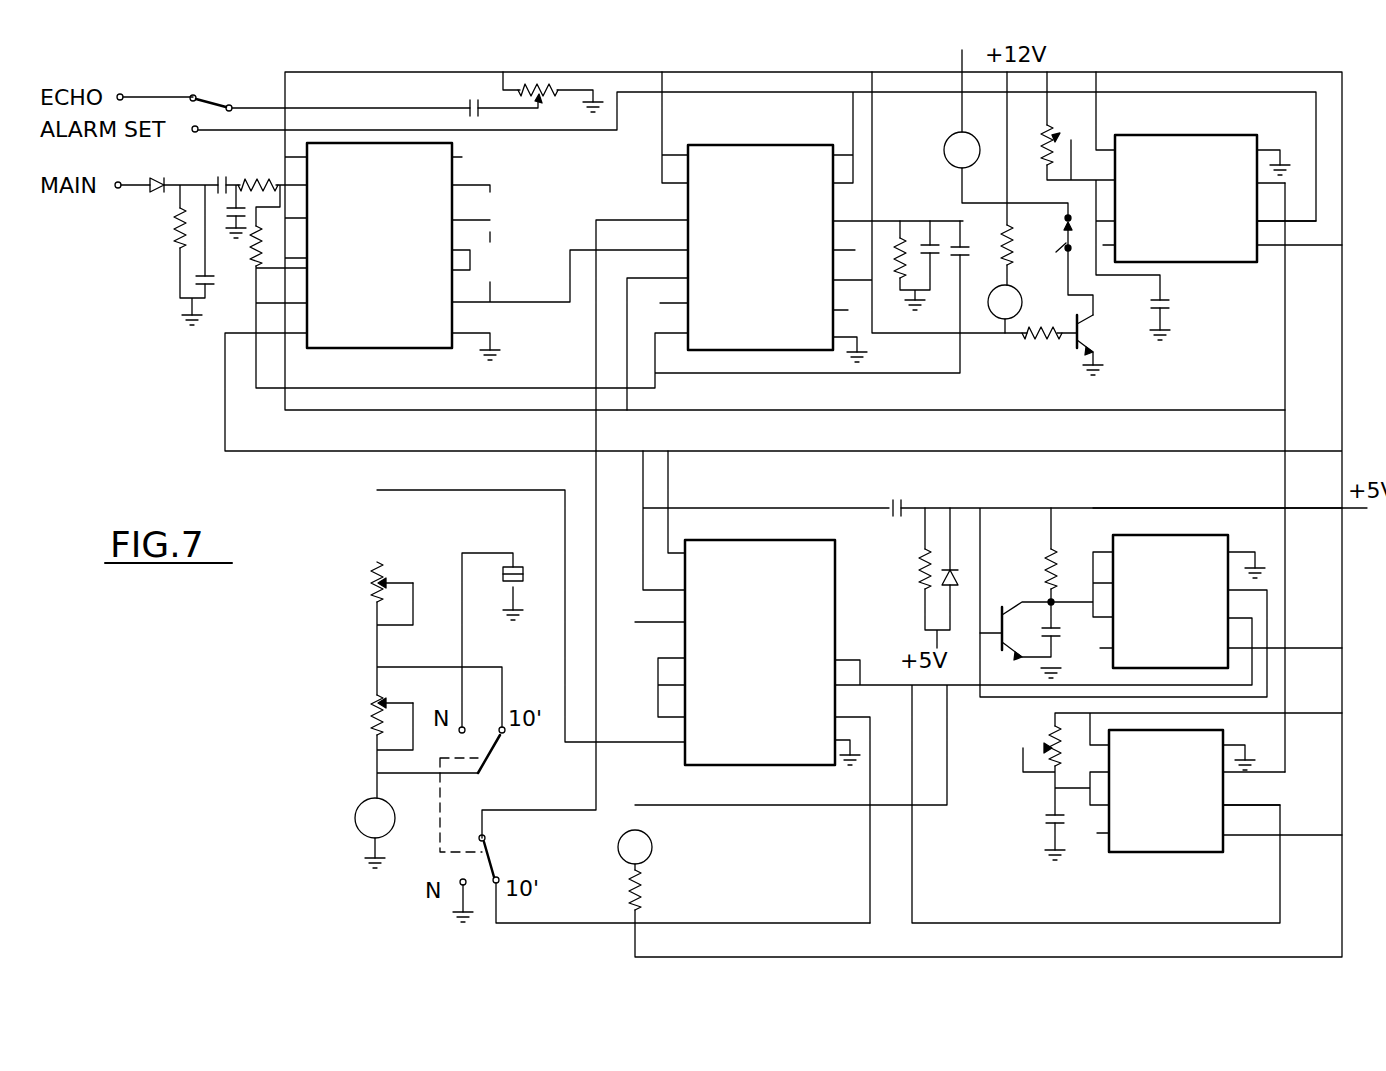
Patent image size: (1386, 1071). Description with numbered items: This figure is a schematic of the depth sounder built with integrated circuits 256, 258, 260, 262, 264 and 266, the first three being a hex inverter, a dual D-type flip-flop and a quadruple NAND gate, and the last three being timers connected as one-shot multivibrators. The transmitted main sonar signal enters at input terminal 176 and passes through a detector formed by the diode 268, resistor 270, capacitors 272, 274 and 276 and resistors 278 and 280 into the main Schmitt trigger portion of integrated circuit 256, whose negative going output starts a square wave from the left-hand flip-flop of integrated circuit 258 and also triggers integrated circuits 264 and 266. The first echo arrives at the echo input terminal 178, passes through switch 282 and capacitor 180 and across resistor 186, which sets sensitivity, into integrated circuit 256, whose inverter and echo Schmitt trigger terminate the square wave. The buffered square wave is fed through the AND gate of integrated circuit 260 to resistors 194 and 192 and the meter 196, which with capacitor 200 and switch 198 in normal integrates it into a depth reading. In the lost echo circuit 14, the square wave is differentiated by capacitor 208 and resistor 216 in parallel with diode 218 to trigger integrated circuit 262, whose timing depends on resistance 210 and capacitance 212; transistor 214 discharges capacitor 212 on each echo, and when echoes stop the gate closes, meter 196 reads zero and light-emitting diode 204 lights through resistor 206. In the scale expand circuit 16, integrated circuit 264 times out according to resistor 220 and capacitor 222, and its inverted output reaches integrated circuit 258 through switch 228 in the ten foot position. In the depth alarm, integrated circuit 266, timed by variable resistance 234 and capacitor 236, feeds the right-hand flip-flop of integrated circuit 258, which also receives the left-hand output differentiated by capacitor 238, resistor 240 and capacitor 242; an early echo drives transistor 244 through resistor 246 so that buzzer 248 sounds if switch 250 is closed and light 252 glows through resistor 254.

The lost echo circuit 14 is at (1140, 508).
The scale expand circuit 16 is at (1282, 750).
The input terminal 176 is at (113, 193).
The echo input terminal 178 is at (121, 92).
The capacitor 180 is at (470, 103).
The resistor 186 is at (545, 100).
The resistor 192 is at (375, 700).
The resistor 194 is at (375, 565).
The meter 196 is at (355, 825).
The switch 198 is at (490, 766).
The capacitor 200 is at (525, 572).
The light-emitting diode 204 is at (622, 858).
The resistor 206 is at (641, 890).
The capacitor 208 is at (893, 503).
The resistance 210 is at (1048, 555).
The capacitance 212 is at (1053, 636).
The transistor 214 is at (1000, 625).
The resistor 216 is at (920, 565).
The diode 218 is at (945, 590).
The resistor 220 is at (1045, 757).
The capacitor 222 is at (1045, 825).
The switch 228 is at (490, 846).
The variable resistance 234 is at (1055, 130).
The capacitor 236 is at (1165, 302).
The capacitor 238 is at (979, 266).
The resistor 240 is at (896, 256).
The capacitor 242 is at (925, 242).
The transistor 244 is at (1077, 345).
The resistor 246 is at (1035, 338).
The buzzer 248 is at (946, 140).
The switch 250 is at (1062, 243).
The light 252 is at (998, 318).
The resistor 254 is at (1029, 235).
The integrated circuit 256 is at (355, 350).
The integrated circuit 258 is at (755, 145).
The integrated circuit 260 is at (745, 768).
The integrated circuit 262 is at (1188, 535).
The integrated circuit 264 is at (1140, 855).
The integrated circuit 266 is at (1190, 135).
The diode 268 is at (150, 182).
The resistor 270 is at (176, 226).
The capacitor 272 is at (200, 290).
The capacitor 274 is at (218, 182).
The capacitor 276 is at (232, 218).
The resistor 278 is at (265, 182).
The resistor 280 is at (252, 250).
The switch 282 is at (215, 100).